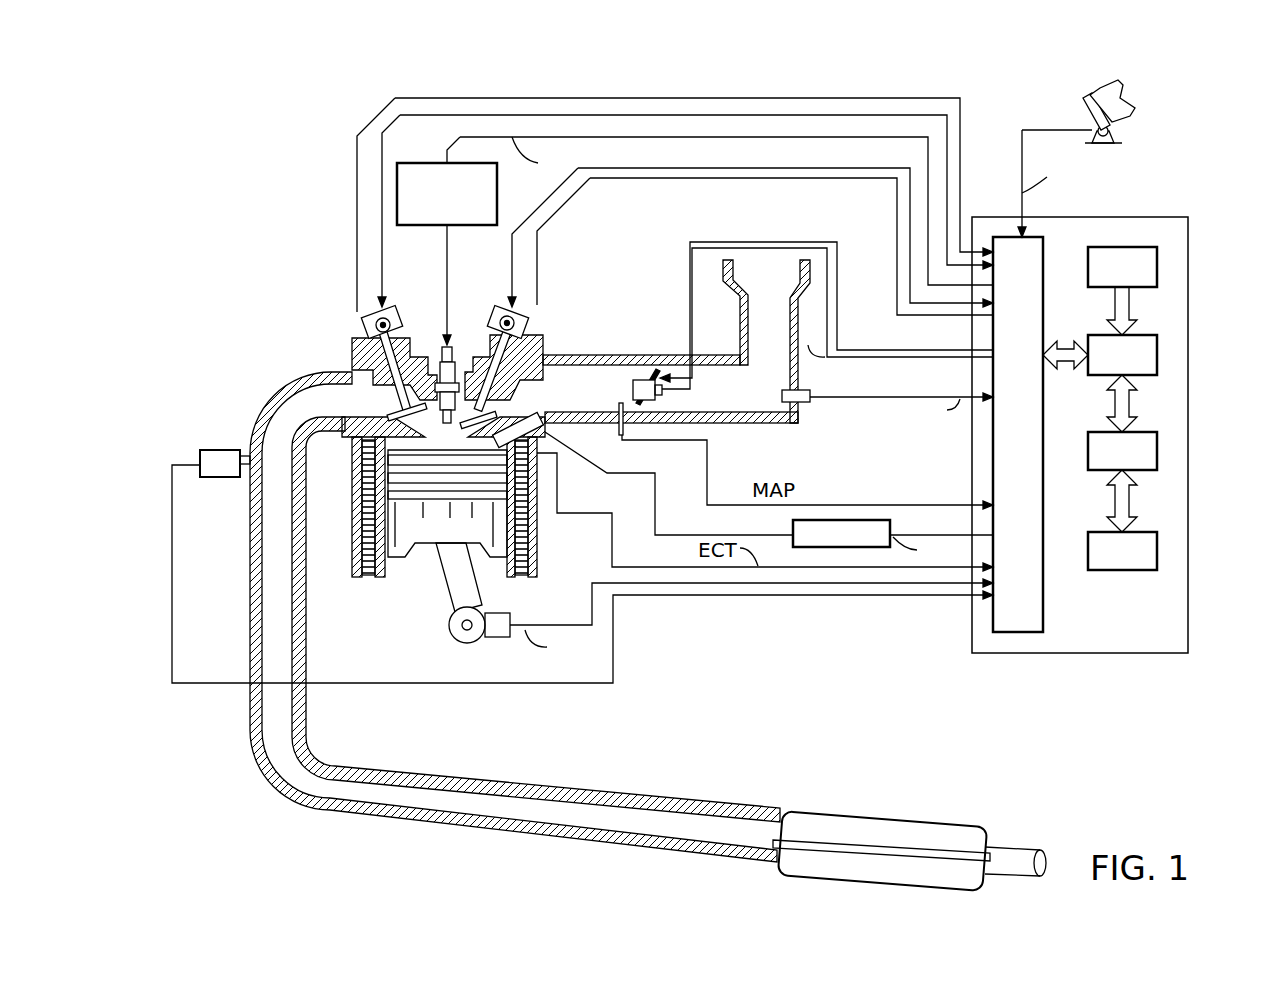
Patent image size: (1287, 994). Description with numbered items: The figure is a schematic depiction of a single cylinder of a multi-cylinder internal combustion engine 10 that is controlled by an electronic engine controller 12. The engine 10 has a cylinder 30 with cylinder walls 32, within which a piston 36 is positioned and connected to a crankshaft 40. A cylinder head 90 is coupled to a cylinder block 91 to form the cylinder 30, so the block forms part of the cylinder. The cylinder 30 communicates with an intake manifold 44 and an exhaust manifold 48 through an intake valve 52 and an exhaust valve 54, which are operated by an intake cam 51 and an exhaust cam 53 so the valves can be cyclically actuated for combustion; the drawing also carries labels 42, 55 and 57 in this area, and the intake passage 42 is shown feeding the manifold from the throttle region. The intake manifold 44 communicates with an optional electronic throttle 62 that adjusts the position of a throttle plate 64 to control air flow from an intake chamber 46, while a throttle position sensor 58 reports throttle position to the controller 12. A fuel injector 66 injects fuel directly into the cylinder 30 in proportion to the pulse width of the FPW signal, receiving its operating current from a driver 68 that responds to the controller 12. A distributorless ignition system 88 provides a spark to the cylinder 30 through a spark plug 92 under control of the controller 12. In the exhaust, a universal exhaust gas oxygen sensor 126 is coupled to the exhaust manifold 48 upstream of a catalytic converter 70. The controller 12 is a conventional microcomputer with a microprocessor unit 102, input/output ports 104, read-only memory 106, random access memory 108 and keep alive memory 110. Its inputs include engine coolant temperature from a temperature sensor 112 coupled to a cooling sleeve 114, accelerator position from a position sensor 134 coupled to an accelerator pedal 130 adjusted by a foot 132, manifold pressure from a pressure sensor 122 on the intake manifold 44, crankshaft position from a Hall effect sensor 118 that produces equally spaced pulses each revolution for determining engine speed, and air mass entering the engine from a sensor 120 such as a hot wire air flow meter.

The internal combustion engine 10 is at (293, 300).
The electronic engine controller 12 is at (1125, 418).
The cylinder 30 is at (445, 432).
The cylinder walls 32 is at (392, 562).
The piston 36 is at (432, 527).
The crankshaft 40 is at (458, 643).
The intake passage / throttle body 42 is at (773, 313).
The intake manifold 44 is at (580, 398).
The intake chamber 46 is at (688, 408).
The exhaust manifold 48 is at (331, 408).
The intake cam 51 is at (492, 292).
The intake valve 52 is at (501, 405).
The exhaust cam 53 is at (391, 304).
The exhaust valve 54 is at (401, 408).
The intake valve position sensor 55 is at (516, 328).
The exhaust valve position sensor 57 is at (373, 330).
The throttle position sensor 58 is at (660, 367).
The electronic throttle 62 is at (638, 377).
The throttle plate 64 is at (657, 366).
The fuel injector 66 is at (553, 445).
The driver 68 is at (820, 547).
The catalytic converter 70 is at (870, 815).
The distributorless ignition system 88 is at (415, 163).
The cylinder head 90 is at (350, 446).
The cylinder block 91 is at (345, 476).
The spark plug 92 is at (437, 353).
The microprocessor unit 102 is at (1158, 350).
The input/output ports 104 is at (1046, 246).
The read-only memory 106 is at (1158, 262).
The random access memory 108 is at (1158, 450).
The keep alive memory 110 is at (1158, 550).
The temperature sensor 112 is at (540, 460).
The cooling sleeve 114 is at (537, 548).
The Hall effect sensor 118 is at (492, 638).
The air mass sensor 120 is at (812, 393).
The pressure sensor 122 is at (620, 403).
The Universal Exhaust Gas Oxygen sensor 126 is at (200, 452).
The accelerator pedal 130 is at (1085, 102).
The foot 132 is at (1128, 92).
The position sensor 134 is at (1112, 133).